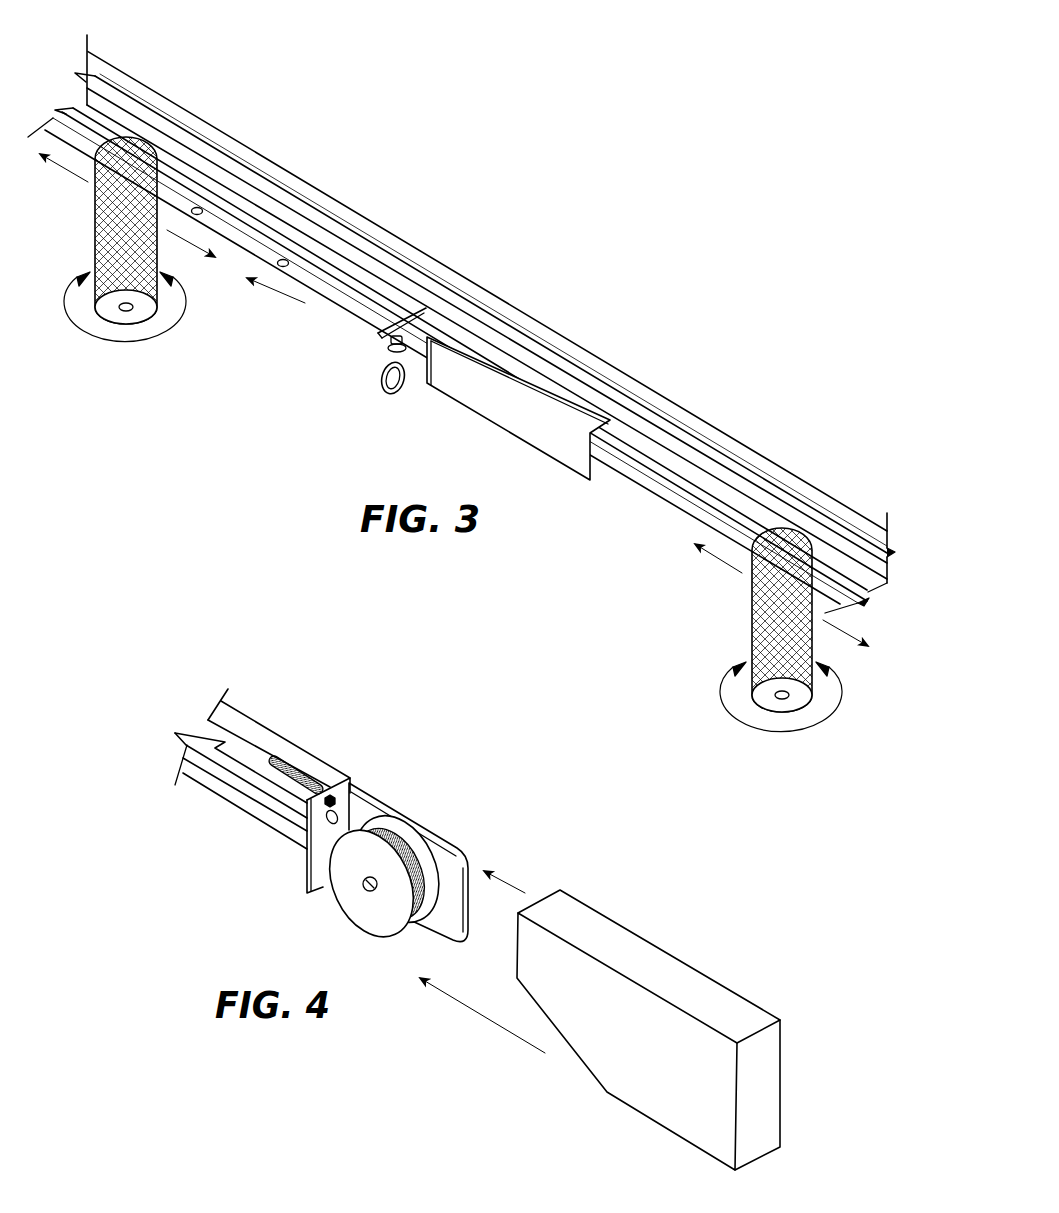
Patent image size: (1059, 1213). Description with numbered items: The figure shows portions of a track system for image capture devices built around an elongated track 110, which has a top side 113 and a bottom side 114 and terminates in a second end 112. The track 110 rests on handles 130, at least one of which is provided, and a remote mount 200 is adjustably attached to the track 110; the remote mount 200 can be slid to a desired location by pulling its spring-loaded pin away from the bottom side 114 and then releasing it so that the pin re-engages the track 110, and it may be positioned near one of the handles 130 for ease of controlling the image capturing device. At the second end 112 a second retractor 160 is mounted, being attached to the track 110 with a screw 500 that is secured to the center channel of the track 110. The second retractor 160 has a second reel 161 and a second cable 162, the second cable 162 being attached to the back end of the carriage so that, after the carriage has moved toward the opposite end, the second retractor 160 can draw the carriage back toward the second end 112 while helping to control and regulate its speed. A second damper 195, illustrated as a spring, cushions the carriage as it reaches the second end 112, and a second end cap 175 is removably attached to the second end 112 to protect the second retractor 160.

In FIG. 3, the track 110 is at (422, 257).
In FIG. 4, the track 110 is at (240, 720).
In FIG. 3, the top side 113 is at (580, 347).
In FIG. 3, the bottom side 114 is at (325, 283).
In FIG. 3, the handle 130 is at (137, 163).
In FIG. 3, the remote mount 200 is at (523, 427).
In FIG. 4, the second damper 195 is at (310, 763).
In FIG. 4, the second end 112 is at (343, 793).
In FIG. 4, the screw 500 is at (337, 813).
In FIG. 4, the second cable 162 is at (365, 824).
In FIG. 4, the second retractor 160 is at (281, 941).
In FIG. 4, the second reel 161 is at (372, 913).
In FIG. 4, the second end cap 175 is at (630, 947).